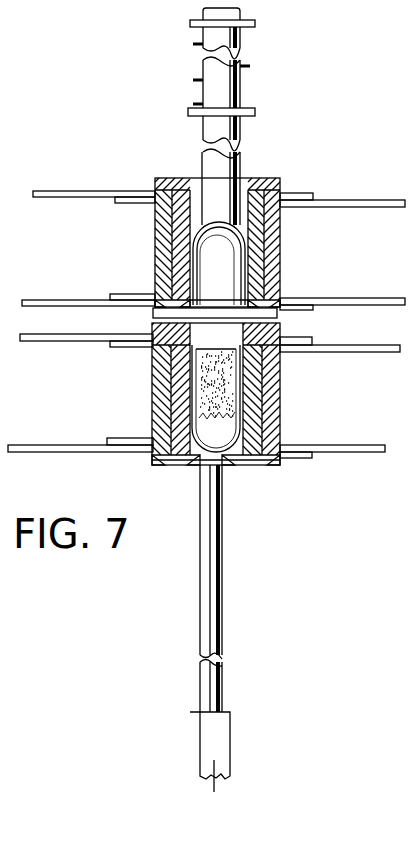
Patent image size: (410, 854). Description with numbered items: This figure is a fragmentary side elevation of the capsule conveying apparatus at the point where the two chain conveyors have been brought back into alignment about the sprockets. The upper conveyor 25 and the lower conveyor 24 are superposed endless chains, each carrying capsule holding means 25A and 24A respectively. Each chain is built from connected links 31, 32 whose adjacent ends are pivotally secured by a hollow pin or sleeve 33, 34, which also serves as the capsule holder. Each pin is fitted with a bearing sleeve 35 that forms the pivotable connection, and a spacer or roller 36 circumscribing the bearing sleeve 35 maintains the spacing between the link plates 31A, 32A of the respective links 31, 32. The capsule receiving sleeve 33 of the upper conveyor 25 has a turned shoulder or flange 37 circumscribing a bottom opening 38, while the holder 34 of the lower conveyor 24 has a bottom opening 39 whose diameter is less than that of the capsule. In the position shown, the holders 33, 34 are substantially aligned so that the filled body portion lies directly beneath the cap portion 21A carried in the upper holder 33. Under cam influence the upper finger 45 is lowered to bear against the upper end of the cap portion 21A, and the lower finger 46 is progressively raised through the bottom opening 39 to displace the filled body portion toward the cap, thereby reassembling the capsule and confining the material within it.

The upper finger 45 is at (243, 180).
The capsule receiving sleeve 33 is at (252, 177).
The capsule holding means 25A is at (298, 168).
The upper conveyor 25 is at (110, 192).
The link 31 is at (330, 200).
The link plate 31A is at (50, 198).
The cap portion 21A is at (280, 222).
The bearing sleeve 35 is at (275, 245).
The spacer or roller 36 is at (278, 268).
The turned shoulder or flange 37 is at (200, 290).
The bottom opening 38 is at (178, 311).
The capsule holding means 24A is at (298, 335).
The lower conveyor 24 is at (82, 453).
The link 32 is at (338, 353).
The link plate 32A is at (47, 342).
The bottom opening 39 is at (202, 462).
The capsule holder or receiving sleeve 34 is at (239, 466).
The lower finger 46 is at (222, 608).